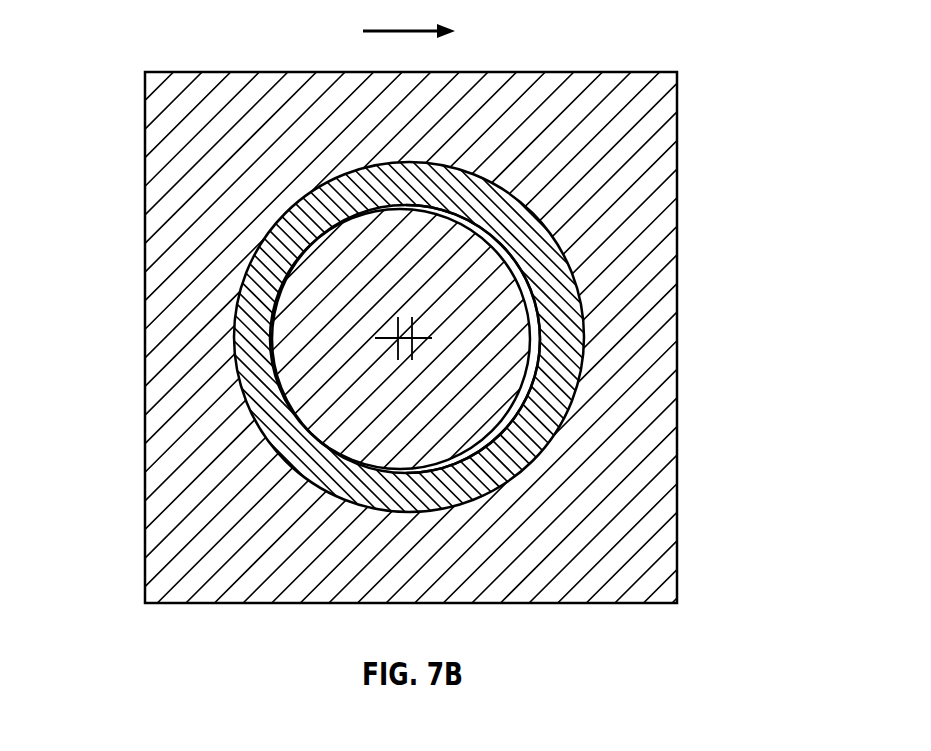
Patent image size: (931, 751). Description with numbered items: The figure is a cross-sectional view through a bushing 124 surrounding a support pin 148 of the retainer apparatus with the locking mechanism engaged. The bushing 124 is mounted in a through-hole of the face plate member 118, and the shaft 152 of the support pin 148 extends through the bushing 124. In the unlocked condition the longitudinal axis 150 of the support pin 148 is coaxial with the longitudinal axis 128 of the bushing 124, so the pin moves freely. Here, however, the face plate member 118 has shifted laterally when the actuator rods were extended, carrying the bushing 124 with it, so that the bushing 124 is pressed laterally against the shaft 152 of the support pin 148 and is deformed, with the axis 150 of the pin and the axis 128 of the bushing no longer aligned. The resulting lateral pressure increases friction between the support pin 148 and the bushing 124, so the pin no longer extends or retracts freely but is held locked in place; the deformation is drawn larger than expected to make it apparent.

The face plate member 118 is at (182, 550).
The bushing 124 is at (288, 427).
The longitudinal axis of bushing 128 is at (422, 334).
The support pin 148 is at (308, 343).
The longitudinal axis of support pin 150 is at (387, 333).
The shaft 152 is at (500, 390).